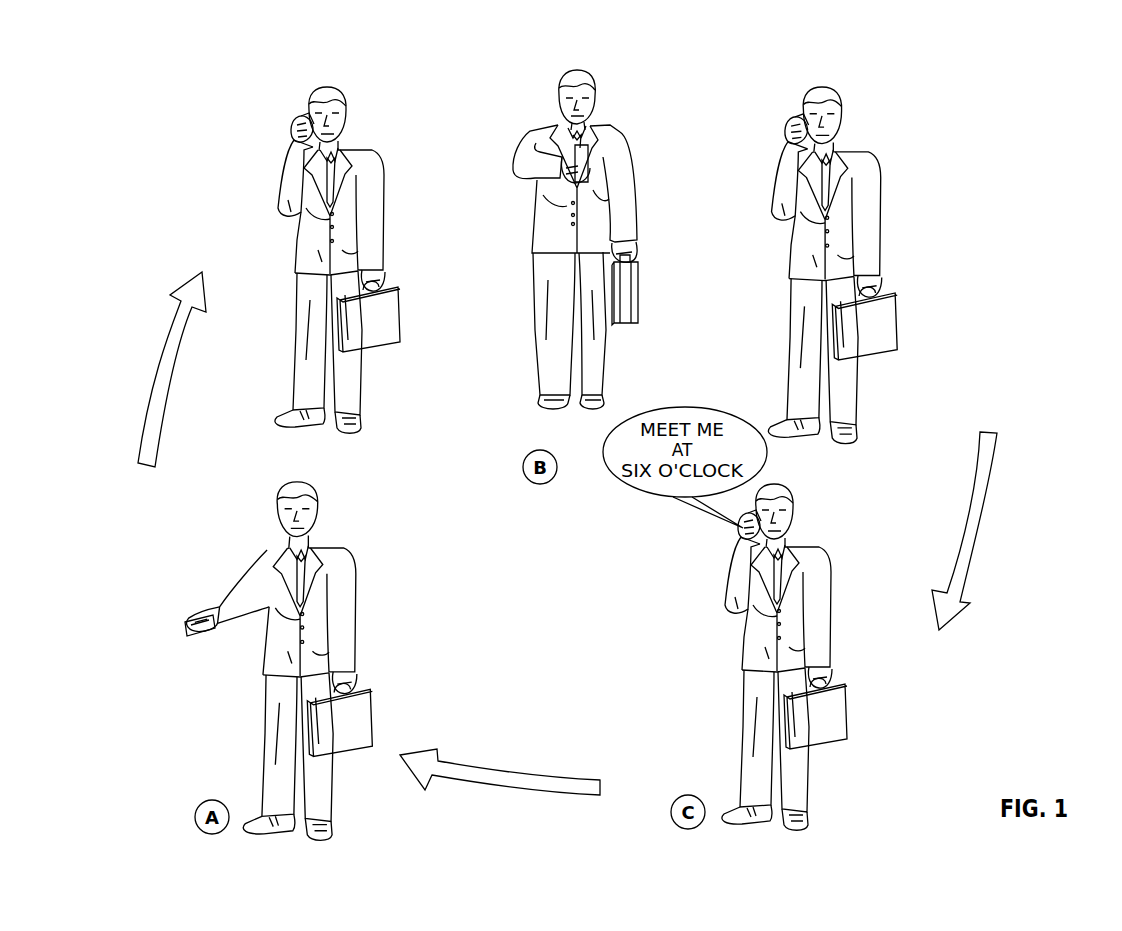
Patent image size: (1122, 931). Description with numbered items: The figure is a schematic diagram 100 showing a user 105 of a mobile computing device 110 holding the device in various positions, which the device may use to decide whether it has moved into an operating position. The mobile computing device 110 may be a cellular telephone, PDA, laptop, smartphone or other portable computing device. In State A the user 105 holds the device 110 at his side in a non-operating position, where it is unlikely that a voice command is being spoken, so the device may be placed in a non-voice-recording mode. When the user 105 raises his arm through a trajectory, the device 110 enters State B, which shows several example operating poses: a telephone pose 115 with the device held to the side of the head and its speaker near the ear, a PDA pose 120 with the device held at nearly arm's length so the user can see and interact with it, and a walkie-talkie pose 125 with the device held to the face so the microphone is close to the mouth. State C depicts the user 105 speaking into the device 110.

The diagram 100 is at (162, 83).
The user 105 is at (230, 560).
The mobile computing device 110 is at (190, 612).
The telephone pose 115 is at (278, 118).
The PDA pose 120 is at (503, 112).
The walkie-talkie pose 125 is at (786, 103).